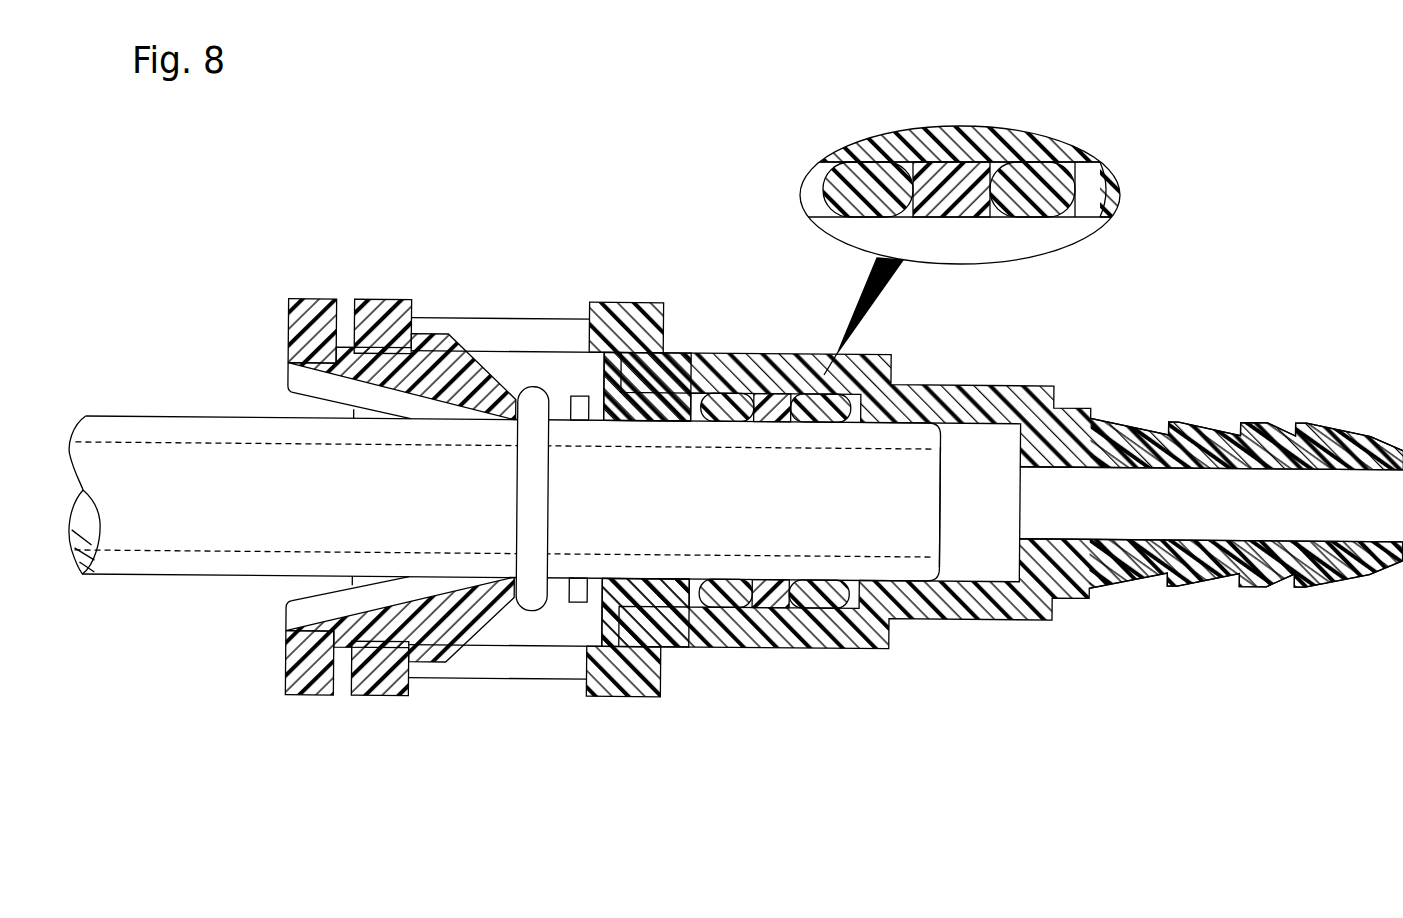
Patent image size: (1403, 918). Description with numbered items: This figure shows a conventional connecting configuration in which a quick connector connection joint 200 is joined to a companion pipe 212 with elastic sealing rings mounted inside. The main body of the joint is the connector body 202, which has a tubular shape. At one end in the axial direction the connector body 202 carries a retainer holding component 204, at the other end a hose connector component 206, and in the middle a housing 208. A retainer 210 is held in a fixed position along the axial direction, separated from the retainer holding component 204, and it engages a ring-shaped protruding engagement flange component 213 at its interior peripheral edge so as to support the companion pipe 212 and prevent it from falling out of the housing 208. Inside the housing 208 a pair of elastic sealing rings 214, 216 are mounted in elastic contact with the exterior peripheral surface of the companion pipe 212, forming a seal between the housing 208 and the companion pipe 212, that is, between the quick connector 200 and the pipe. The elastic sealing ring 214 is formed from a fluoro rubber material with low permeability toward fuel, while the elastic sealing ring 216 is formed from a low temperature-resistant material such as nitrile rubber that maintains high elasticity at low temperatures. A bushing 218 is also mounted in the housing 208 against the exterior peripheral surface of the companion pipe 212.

The quick connector connection joint 200 is at (668, 202).
The connector body 202 is at (707, 288).
The retainer holding component 204 is at (612, 296).
The hose connector component 206 is at (1223, 430).
The housing 208 is at (773, 348).
The retainer 210 is at (318, 294).
The companion pipe 212 is at (214, 580).
The engagement flange component 213 is at (530, 597).
The elastic sealing ring 214 is at (822, 597).
The elastic sealing ring 216 is at (735, 597).
The bushing 218 is at (633, 597).